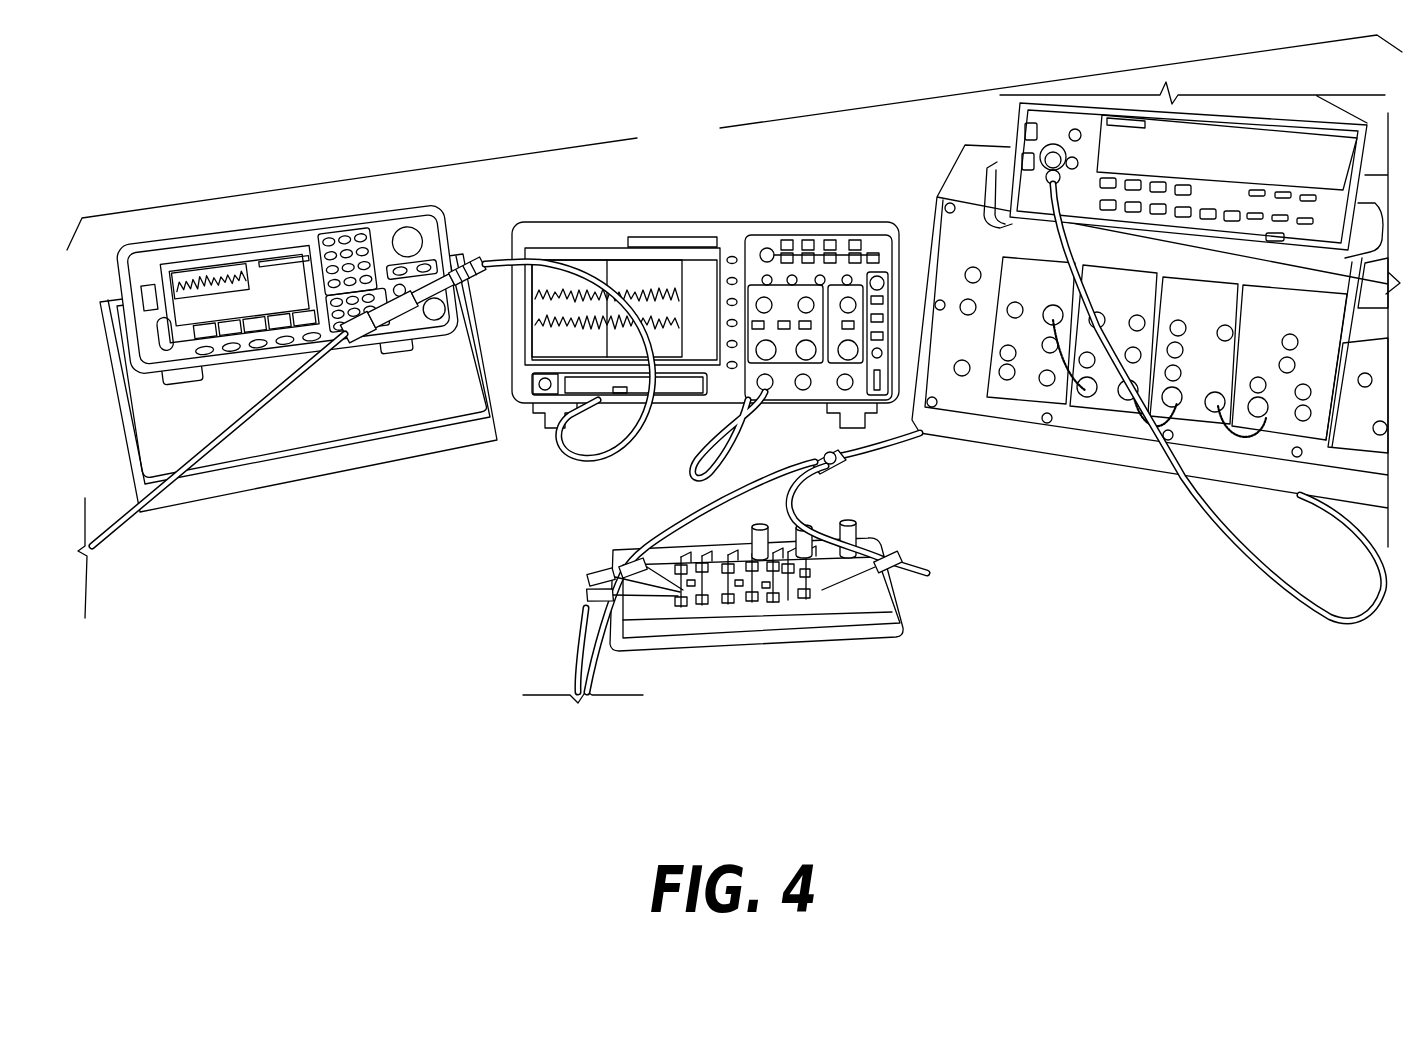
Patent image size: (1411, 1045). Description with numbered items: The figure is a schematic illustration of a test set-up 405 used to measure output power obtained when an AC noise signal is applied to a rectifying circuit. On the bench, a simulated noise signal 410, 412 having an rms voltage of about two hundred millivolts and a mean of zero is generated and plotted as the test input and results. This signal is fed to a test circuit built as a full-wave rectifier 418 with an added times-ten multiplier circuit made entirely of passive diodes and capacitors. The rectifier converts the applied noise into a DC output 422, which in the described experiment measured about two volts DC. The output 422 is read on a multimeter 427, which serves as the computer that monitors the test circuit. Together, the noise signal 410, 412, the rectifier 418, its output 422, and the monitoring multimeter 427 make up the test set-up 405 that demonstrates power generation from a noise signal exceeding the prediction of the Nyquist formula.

The test set-up 405 is at (708, 154).
The noise signal 410 is at (198, 284).
The noise signal 412 is at (538, 356).
The full-wave rectifier 418 is at (560, 665).
The output 422 is at (920, 608).
The multimeter 427 is at (1253, 270).